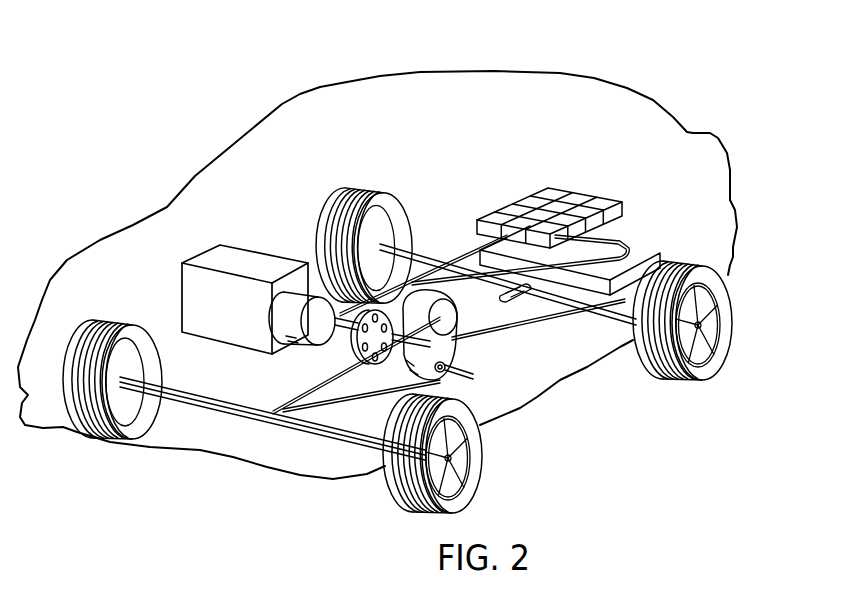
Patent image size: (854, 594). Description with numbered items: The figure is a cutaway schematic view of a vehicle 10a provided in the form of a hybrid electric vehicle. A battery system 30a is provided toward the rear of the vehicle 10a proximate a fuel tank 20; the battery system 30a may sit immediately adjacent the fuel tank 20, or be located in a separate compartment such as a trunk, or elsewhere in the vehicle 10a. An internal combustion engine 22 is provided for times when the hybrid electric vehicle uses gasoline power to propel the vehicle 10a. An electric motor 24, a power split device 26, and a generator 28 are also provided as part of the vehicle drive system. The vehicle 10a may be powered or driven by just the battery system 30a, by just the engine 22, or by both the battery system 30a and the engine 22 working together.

The vehicle 10a is at (659, 84).
The fuel tank 20 is at (640, 257).
The internal combustion engine 22 is at (212, 262).
The electric motor 24 is at (304, 293).
The power split device 26 is at (355, 356).
The generator 28 is at (456, 361).
The battery system 30a is at (541, 181).